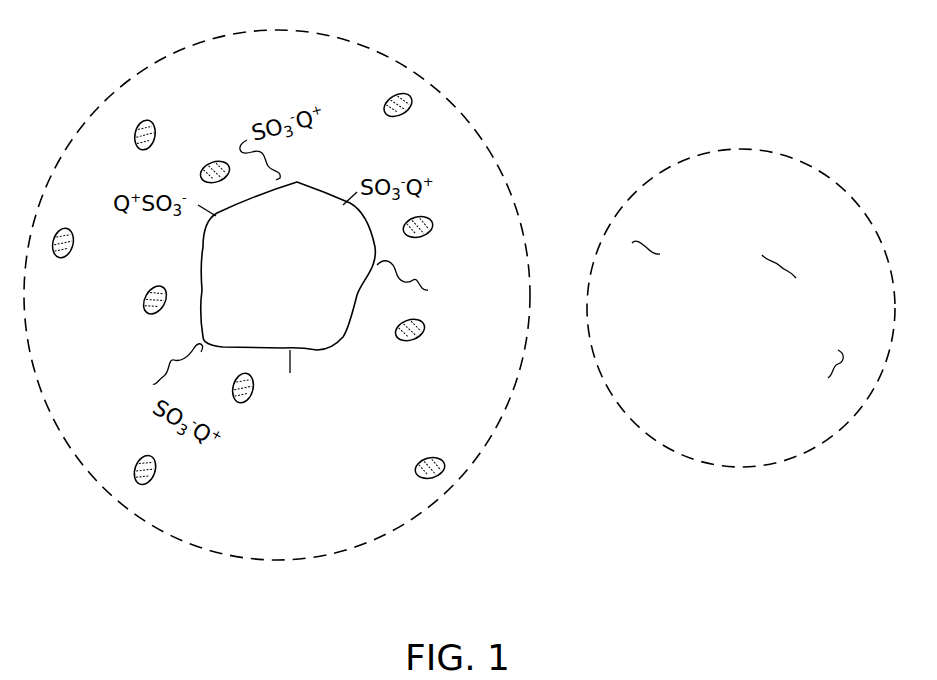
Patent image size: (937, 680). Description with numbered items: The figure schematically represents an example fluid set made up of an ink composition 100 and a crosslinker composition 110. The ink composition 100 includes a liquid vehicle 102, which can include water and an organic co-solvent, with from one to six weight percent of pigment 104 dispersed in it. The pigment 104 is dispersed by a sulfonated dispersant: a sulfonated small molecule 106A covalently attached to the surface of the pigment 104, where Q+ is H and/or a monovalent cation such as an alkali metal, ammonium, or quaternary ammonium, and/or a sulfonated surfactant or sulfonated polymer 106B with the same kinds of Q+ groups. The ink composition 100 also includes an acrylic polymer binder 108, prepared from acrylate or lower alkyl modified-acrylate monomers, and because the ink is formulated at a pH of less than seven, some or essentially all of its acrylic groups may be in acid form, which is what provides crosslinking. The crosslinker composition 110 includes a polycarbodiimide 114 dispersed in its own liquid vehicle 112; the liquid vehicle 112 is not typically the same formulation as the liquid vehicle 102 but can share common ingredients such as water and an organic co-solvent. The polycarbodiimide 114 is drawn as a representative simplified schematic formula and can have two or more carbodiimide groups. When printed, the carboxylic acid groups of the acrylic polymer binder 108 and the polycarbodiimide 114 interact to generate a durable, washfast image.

The ink composition 100 is at (103, 62).
The liquid vehicle 102 is at (251, 91).
The pigment 104 is at (307, 285).
The sulfonated small molecule 106A is at (317, 405).
The sulfonated surfactant or sulfonated polymer 106B is at (453, 302).
The acrylic polymer binder 108 is at (147, 313).
The crosslinker composition 110 is at (814, 143).
The liquid vehicle 112 is at (781, 206).
The polycarbodiimide 114 is at (742, 273).